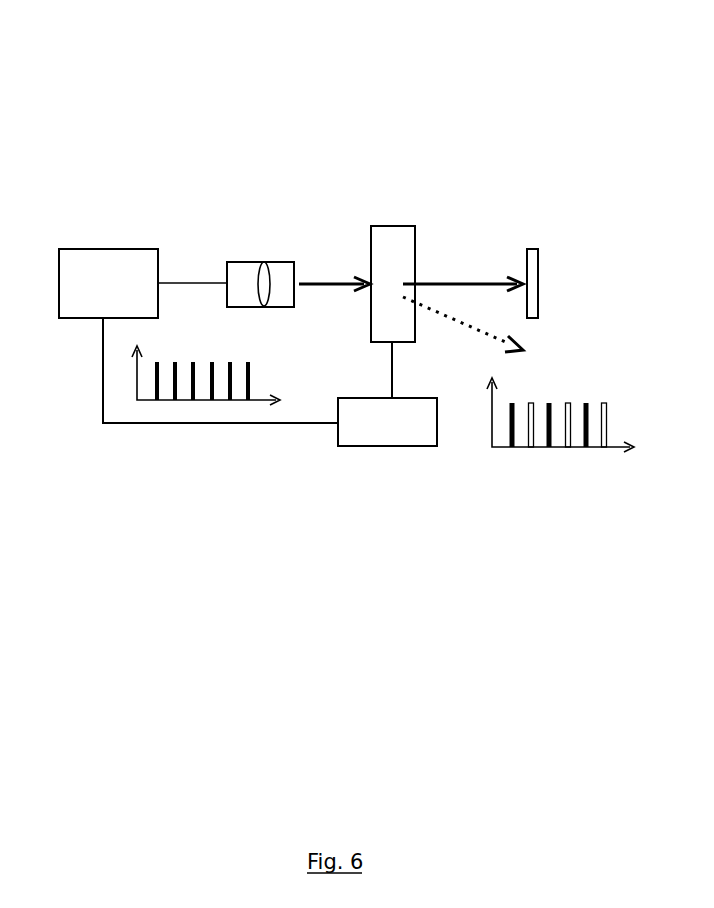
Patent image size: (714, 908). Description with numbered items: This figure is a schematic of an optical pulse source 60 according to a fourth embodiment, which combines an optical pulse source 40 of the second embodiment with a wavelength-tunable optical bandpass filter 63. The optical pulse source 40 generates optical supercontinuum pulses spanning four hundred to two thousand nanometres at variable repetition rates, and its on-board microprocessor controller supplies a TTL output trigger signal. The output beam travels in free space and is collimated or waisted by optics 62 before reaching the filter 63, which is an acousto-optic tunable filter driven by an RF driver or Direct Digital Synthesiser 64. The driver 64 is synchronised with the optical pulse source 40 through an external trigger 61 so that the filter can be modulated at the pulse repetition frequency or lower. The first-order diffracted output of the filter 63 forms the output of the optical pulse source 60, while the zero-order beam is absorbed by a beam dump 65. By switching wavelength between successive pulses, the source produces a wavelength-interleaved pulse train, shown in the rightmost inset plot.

The optical pulse source 60 is at (137, 99).
The optical pulse source 40 is at (102, 249).
The optics 62 is at (233, 262).
The wavelength-tunable optical bandpass filter 63 is at (385, 226).
The beam dump 65 is at (531, 249).
The external trigger 61 is at (213, 433).
The RF driver or Direct Digital Synthesiser 64 is at (367, 446).